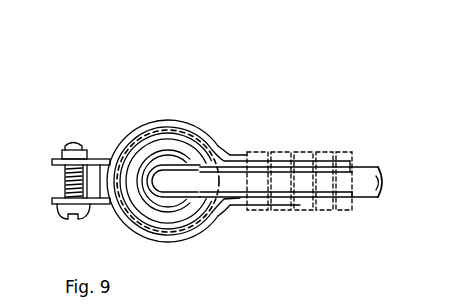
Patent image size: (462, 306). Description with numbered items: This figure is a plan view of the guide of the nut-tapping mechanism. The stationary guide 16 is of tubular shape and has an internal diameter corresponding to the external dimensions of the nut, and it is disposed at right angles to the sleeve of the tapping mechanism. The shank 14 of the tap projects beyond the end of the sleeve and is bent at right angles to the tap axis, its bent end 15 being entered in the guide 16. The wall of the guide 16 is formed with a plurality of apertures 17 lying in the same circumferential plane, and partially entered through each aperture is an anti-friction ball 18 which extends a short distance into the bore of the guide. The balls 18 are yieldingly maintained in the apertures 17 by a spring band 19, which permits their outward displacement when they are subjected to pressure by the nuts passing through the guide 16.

The shank 14 is at (358, 198).
The bent end 15 is at (160, 166).
The guide 16 is at (171, 121).
The apertures 17 is at (216, 146).
The anti-friction ball 18 is at (115, 157).
The spring band 19 is at (120, 222).